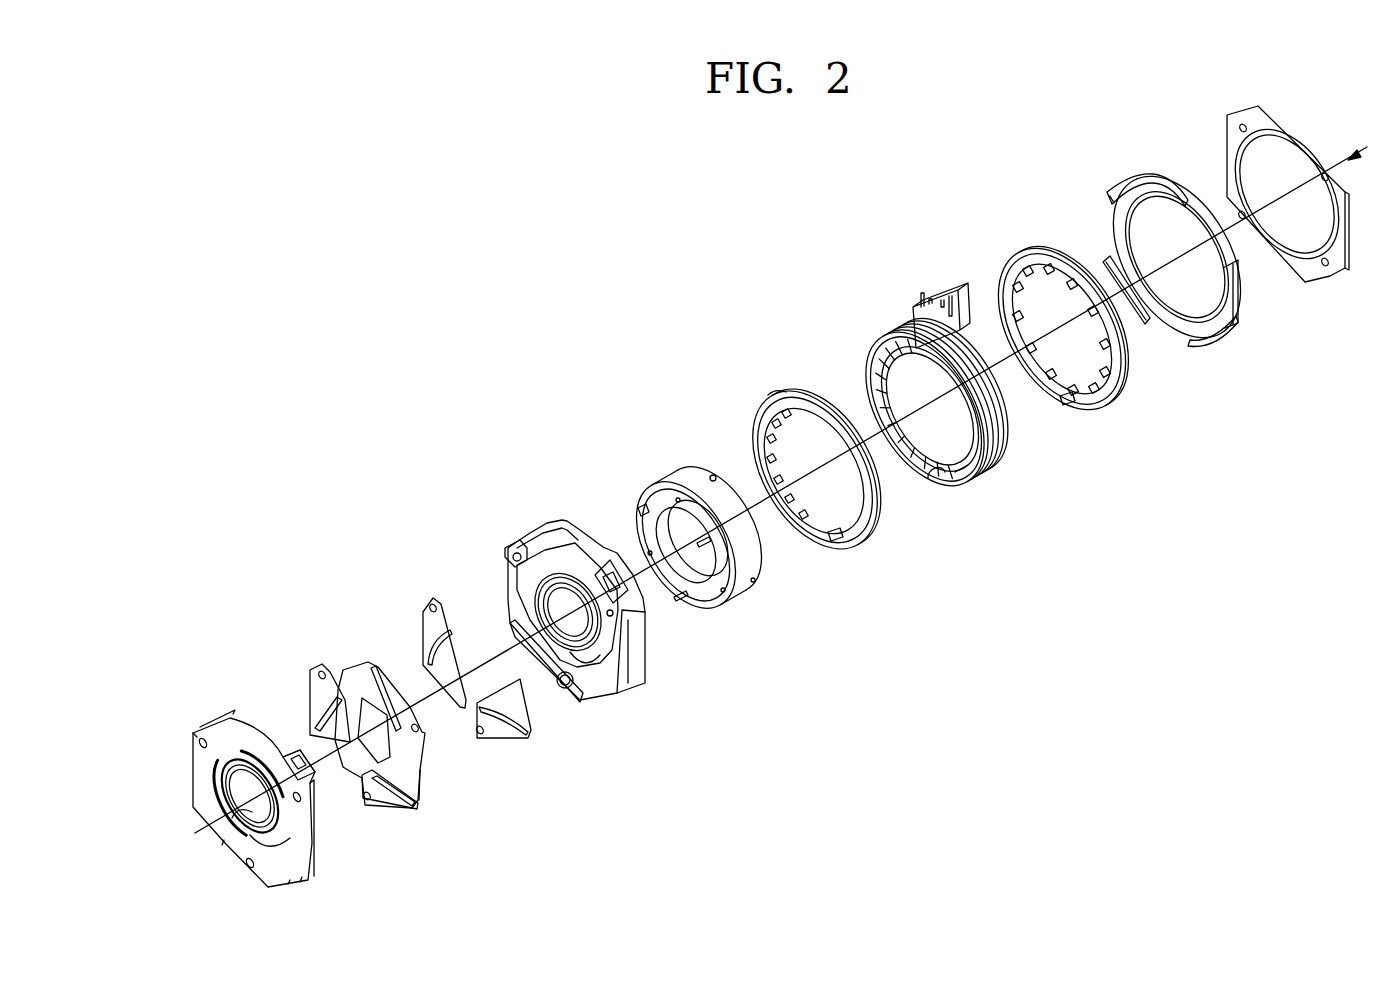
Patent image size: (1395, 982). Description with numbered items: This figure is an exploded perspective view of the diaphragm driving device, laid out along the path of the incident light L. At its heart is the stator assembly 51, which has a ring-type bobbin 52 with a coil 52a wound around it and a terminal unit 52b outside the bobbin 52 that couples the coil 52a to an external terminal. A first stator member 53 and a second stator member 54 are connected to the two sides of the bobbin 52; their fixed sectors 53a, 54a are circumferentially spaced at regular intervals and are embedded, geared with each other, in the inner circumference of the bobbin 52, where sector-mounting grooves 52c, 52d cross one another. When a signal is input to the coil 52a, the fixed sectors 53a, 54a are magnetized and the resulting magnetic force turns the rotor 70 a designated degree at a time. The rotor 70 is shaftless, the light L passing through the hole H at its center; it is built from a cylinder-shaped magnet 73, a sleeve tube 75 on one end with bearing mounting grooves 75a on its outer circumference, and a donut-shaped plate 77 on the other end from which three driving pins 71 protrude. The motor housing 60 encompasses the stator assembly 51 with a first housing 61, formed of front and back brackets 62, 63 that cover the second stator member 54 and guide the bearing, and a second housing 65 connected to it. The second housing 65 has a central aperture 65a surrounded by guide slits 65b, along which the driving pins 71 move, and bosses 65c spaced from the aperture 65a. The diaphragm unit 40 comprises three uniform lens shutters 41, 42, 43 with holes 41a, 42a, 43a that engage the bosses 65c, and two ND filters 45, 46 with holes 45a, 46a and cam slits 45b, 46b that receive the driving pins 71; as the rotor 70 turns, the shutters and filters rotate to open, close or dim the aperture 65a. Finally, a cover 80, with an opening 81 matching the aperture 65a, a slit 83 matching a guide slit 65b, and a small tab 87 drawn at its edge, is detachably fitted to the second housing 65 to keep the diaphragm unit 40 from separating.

The diaphragm unit 40 is at (419, 704).
The lens shutter 41 is at (305, 675).
The hole 41a is at (320, 671).
The lens shutter 42 is at (397, 713).
The hole 42a is at (420, 745).
The lens shutter 43 is at (374, 813).
The hole 43a is at (365, 799).
The ND filter 45 is at (435, 630).
The hole 45a is at (434, 604).
The cam slit 45b is at (458, 641).
The ND filter 46 is at (521, 742).
The hole 46a is at (481, 740).
The cam slit 46b is at (533, 738).
The stator assembly 51 is at (939, 389).
The bobbin 52 is at (951, 392).
The coil 52a is at (994, 421).
The terminal unit 52b is at (963, 327).
The sector-mounting groove 52c is at (938, 478).
The sector-mounting groove 52d is at (974, 469).
The first stator member 53 is at (815, 459).
The fixed sector 53a is at (835, 539).
The second stator member 54 is at (1061, 327).
The fixed sector 54a is at (1068, 401).
The motor housing 60 is at (988, 417).
The first housing 61 is at (1228, 122).
The front bracket 62 is at (1241, 293).
The back bracket 63 is at (1287, 218).
The second housing 65 is at (574, 611).
The aperture 65a is at (590, 702).
The guide slit 65b is at (525, 580).
The boss 65c is at (521, 541).
The rotor 70 is at (714, 526).
The driving pin 71 is at (641, 512).
The magnet 73 is at (760, 574).
The sleeve tube 75 is at (763, 553).
The bearing mounting groove 75a is at (713, 476).
The plate 77 is at (717, 594).
The cover 80 is at (275, 764).
The opening 81 is at (250, 814).
The slit 83 is at (297, 838).
The base plate tab 87 is at (291, 757).
The hole H is at (700, 574).
The incident light L is at (1367, 147).